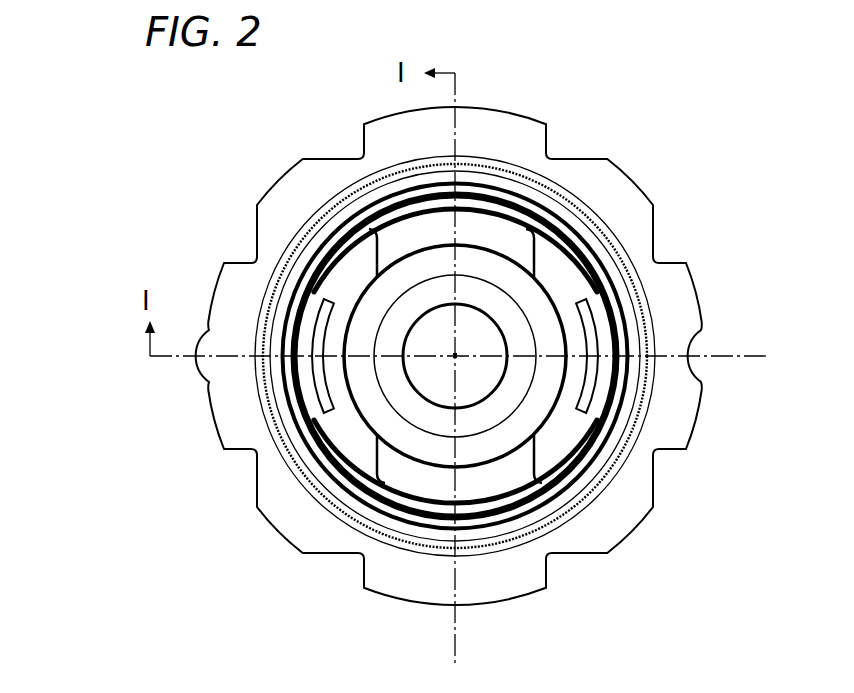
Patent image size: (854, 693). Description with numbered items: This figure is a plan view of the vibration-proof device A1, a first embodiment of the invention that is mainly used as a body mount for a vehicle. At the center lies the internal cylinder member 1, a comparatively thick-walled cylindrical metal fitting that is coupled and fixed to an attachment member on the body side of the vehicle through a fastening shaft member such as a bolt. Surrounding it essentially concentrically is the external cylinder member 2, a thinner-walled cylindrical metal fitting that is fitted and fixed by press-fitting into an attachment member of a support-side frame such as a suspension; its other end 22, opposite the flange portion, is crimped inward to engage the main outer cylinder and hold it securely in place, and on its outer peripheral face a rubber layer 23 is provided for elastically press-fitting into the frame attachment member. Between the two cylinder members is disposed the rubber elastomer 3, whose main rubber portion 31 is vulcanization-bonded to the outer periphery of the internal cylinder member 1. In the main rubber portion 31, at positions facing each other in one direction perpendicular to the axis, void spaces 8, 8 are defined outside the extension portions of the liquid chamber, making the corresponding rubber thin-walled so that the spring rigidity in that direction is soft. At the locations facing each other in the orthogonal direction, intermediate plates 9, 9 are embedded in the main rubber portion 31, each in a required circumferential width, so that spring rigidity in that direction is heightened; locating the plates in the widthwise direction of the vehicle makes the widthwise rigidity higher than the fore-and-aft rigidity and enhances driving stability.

The vibration-proof device A1 is at (733, 119).
The internal cylinder member 1 is at (540, 303).
The external cylinder member 2 is at (333, 488).
The rubber elastomer 3 is at (345, 428).
The void space 8 is at (352, 272).
The intermediate plate 9 is at (318, 325).
The other end of the external cylinder member 22 is at (607, 460).
The rubber layer 23 is at (655, 385).
The main rubber portion 31 is at (353, 272).